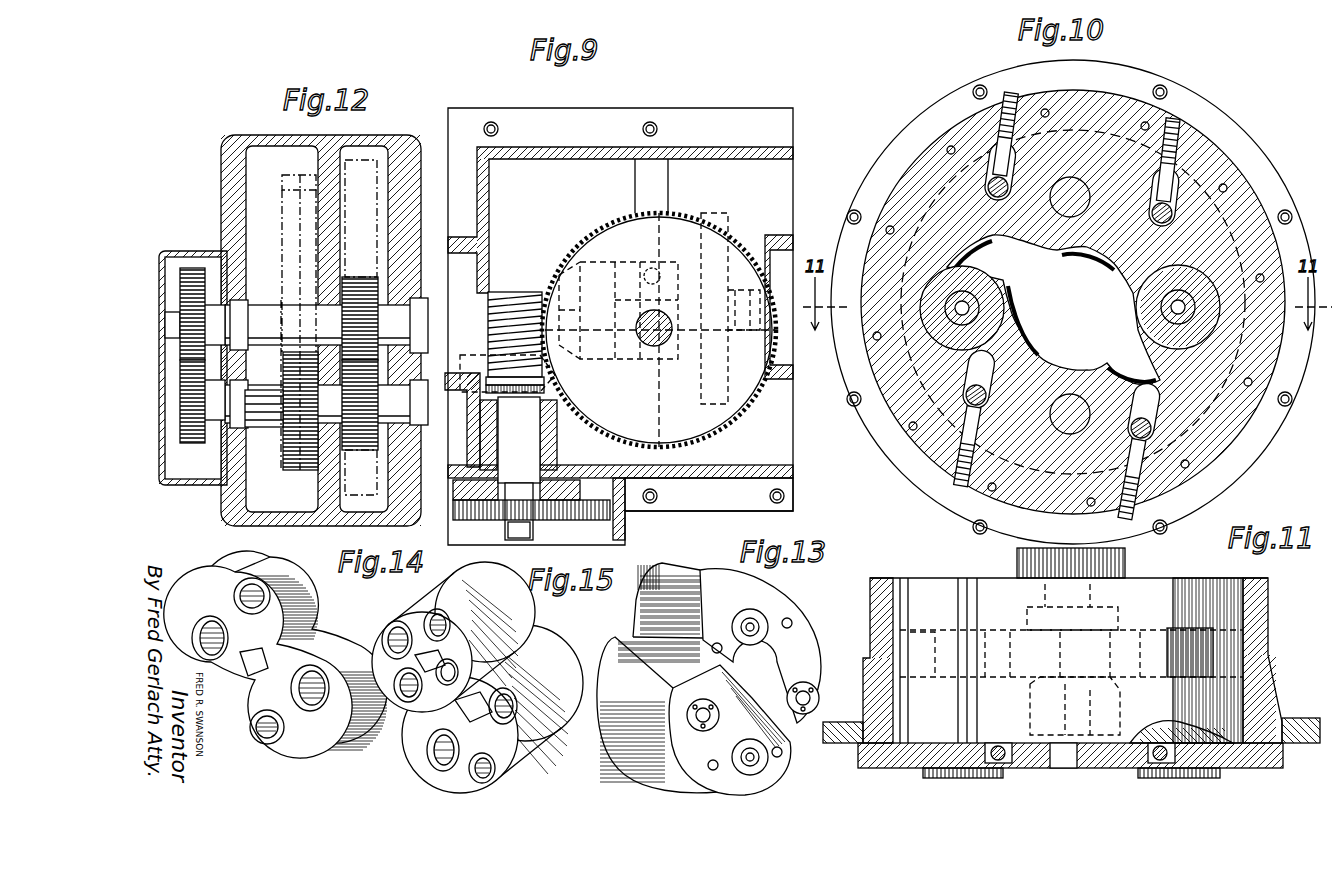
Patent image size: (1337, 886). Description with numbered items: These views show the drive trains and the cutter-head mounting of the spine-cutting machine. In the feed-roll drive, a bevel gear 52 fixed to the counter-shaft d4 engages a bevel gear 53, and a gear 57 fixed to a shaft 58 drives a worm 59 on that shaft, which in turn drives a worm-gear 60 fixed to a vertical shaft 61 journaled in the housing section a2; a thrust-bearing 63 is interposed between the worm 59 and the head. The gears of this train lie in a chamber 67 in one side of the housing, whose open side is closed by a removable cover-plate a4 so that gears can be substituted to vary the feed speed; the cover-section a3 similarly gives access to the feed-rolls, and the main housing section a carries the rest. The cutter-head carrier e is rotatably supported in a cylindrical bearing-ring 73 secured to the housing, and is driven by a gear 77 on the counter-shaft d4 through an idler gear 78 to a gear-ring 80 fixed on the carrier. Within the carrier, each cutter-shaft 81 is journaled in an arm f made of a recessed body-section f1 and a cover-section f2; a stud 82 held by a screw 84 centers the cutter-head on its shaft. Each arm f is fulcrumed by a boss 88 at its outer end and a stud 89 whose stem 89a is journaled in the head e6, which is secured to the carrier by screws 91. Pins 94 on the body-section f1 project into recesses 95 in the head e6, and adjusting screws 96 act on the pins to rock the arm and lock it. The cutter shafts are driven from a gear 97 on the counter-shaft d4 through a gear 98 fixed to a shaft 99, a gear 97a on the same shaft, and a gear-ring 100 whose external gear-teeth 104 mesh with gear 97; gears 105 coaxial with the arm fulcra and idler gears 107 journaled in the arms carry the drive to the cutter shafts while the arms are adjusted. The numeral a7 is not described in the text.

In FIG. 9, the bevel gear 52 is at (618, 310).
In FIG. 9, the bevel gear 53 is at (565, 368).
In FIG. 9, the gear 57 is at (583, 506).
In FIG. 9, the shaft 58 is at (519, 468).
In FIG. 9, the worm 59 is at (490, 318).
In FIG. 9, the worm-gear 60 is at (722, 255).
In FIG. 9, the vertical shaft 61 is at (666, 340).
In FIG. 9, the thrust-bearing 63 is at (556, 392).
In FIG. 9, the chamber 67 is at (556, 525).
In FIG. 10, the cylindrical bearing-ring 73 is at (1182, 95).
In FIG. 11, the cylindrical bearing-ring 73 is at (1305, 730).
In FIG. 12, the gear 77 is at (360, 277).
In FIG. 12, the idler gear 78 is at (362, 450).
In FIG. 12, the gear-ring 80 is at (360, 160).
In FIG. 10, the cutter-shaft 81 is at (1000, 300).
In FIG. 13, the cutter-shaft 81 is at (753, 706).
In FIG. 10, the stud 82 is at (968, 310).
In FIG. 10, the screw 84 is at (1176, 305).
In FIG. 14, the boss 88 is at (247, 588).
In FIG. 10, the stud 89 is at (1076, 405).
In FIG. 10, the stem 89a is at (1076, 185).
In FIG. 11, the stem 89a is at (1078, 755).
In FIG. 13, the stem 89a is at (760, 620).
In FIG. 10, the screws 91 is at (1045, 110).
In FIG. 10, the pins 94 is at (1000, 150).
In FIG. 11, the pins 94 is at (1222, 762).
In FIG. 13, the pins 94 is at (715, 645).
In FIG. 10, the recesses 95 is at (1172, 228).
In FIG. 11, the recesses 95 is at (987, 750).
In FIG. 10, the adjusting screws 96 is at (965, 450).
In FIG. 11, the adjusting screws 96 is at (1012, 762).
In FIG. 12, the gear 97 is at (192, 268).
In FIG. 12, the gear 97a is at (297, 471).
In FIG. 12, the gear 98 is at (195, 443).
In FIG. 12, the shaft 99 is at (268, 428).
In FIG. 12, the gear-ring 100 is at (286, 218).
In FIG. 12, the external gear-teeth 104 is at (298, 169).
In FIG. 11, the gears 105 is at (1125, 560).
In FIG. 13, the gears 105 is at (665, 566).
In FIG. 11, the idler gears 107 is at (1160, 680).
In FIG. 12, the main housing section a is at (392, 140).
In FIG. 9, the housing section a2 is at (740, 475).
In FIG. 9, the cover-section a3 is at (735, 150).
In FIG. 9, the cover-plate a4 is at (627, 531).
In FIG. 12, the housing cover a7 is at (182, 485).
In FIG. 12, the counter-shaft d4 is at (300, 310).
In FIG. 11, the cutter-head carrier e is at (1268, 610).
In FIG. 10, the head e6 is at (1200, 140).
In FIG. 11, the head e6 is at (895, 768).
In FIG. 10, the arm f is at (1050, 344).
In FIG. 11, the arm f is at (1243, 648).
In FIG. 13, the arm f is at (828, 653).
In FIG. 15, the arm f is at (453, 637).
In FIG. 11, the body-section f1 is at (1220, 690).
In FIG. 13, the body-section f1 is at (822, 638).
In FIG. 15, the body-section f1 is at (550, 660).
In FIG. 11, the cover-section f2 is at (1071, 660).
In FIG. 13, the cover-section f2 is at (615, 745).
In FIG. 14, the cover-section f2 is at (345, 728).